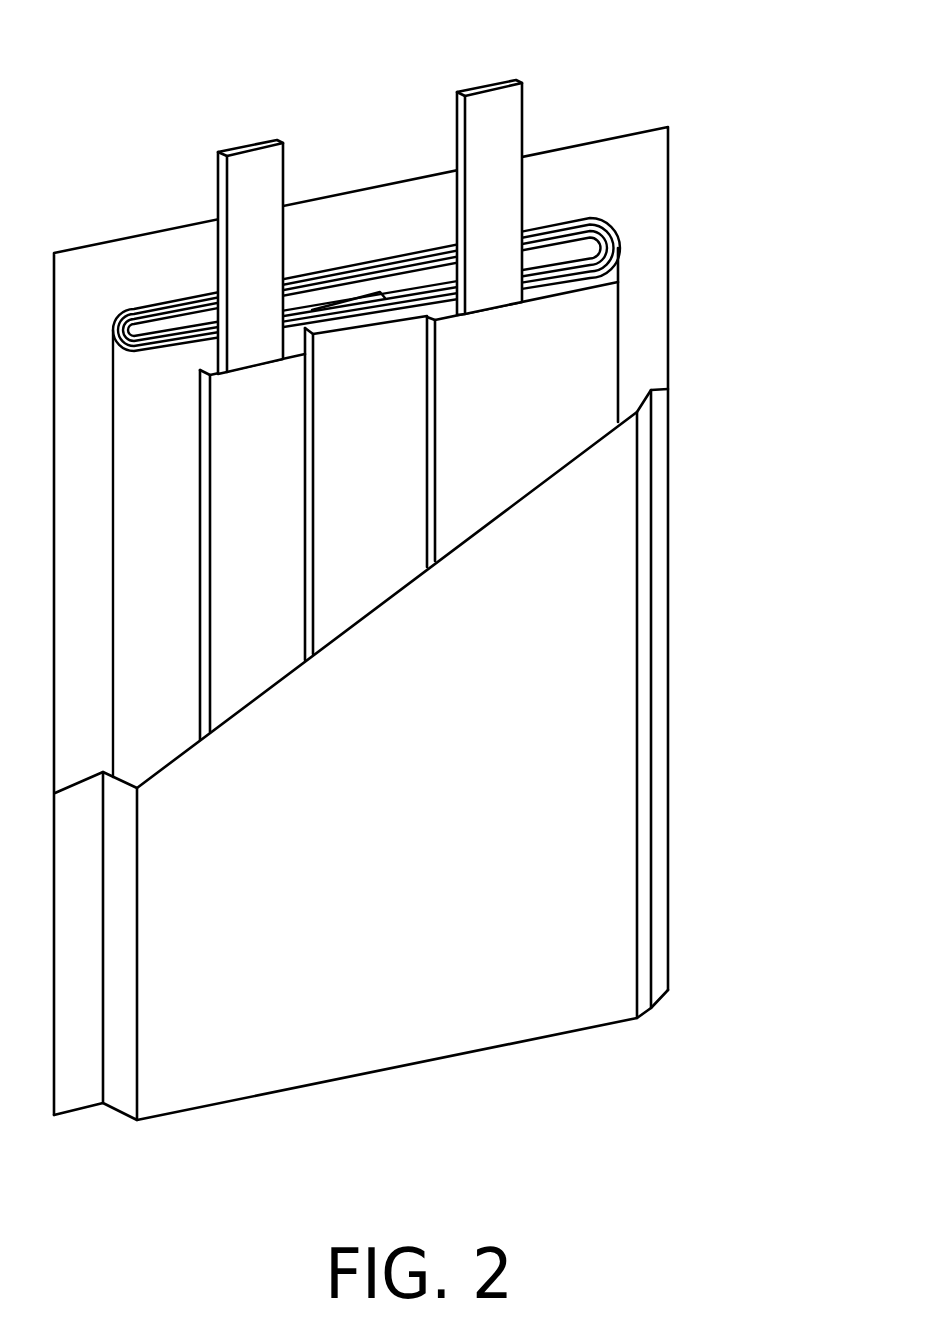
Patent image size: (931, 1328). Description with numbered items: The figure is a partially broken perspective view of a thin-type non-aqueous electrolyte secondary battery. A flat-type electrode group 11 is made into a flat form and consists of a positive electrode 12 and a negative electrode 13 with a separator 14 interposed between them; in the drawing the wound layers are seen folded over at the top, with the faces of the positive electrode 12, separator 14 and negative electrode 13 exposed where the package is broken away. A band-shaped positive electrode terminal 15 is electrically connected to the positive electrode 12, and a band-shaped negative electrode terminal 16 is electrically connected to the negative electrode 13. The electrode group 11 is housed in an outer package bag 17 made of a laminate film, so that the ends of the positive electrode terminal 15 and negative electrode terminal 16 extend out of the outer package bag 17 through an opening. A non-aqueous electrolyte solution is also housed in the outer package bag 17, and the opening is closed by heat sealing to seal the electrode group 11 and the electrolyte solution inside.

The flat-type electrode group 11 is at (765, 302).
The positive electrode 12 is at (598, 327).
The negative electrode 13 is at (273, 550).
The separator 14 is at (405, 418).
The positive electrode terminal 15 is at (490, 108).
The negative electrode terminal 16 is at (252, 165).
The outer package bag 17 is at (597, 765).